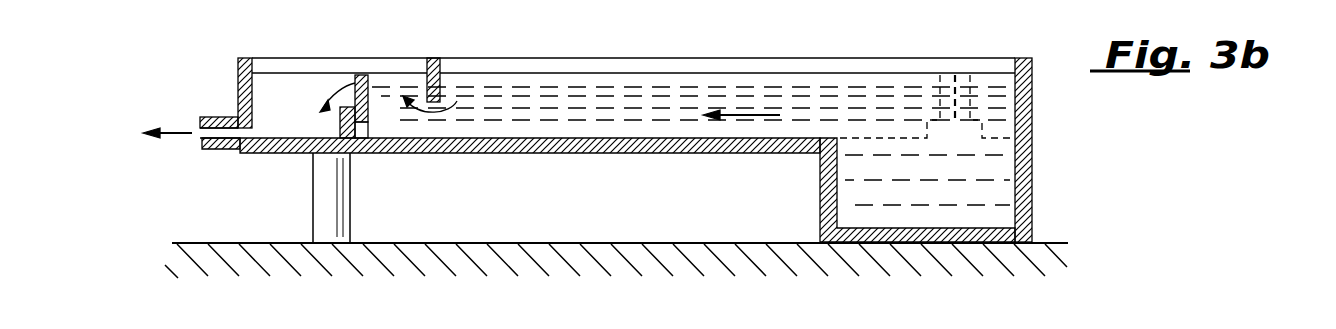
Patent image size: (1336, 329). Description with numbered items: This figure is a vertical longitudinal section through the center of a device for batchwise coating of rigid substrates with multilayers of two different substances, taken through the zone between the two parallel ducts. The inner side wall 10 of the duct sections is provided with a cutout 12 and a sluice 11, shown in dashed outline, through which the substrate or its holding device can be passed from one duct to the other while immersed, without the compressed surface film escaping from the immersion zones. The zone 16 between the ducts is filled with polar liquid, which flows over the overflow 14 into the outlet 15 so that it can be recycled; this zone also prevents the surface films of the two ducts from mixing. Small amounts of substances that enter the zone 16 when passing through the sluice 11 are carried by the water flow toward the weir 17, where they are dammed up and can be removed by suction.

The inner side wall 10 is at (707, 80).
The sluice 11 is at (962, 78).
The cutout 12 is at (855, 192).
The overflow 14 is at (357, 77).
The outlet 15 is at (218, 130).
The zone between the ducts 16 is at (817, 93).
The weir 17 is at (433, 60).